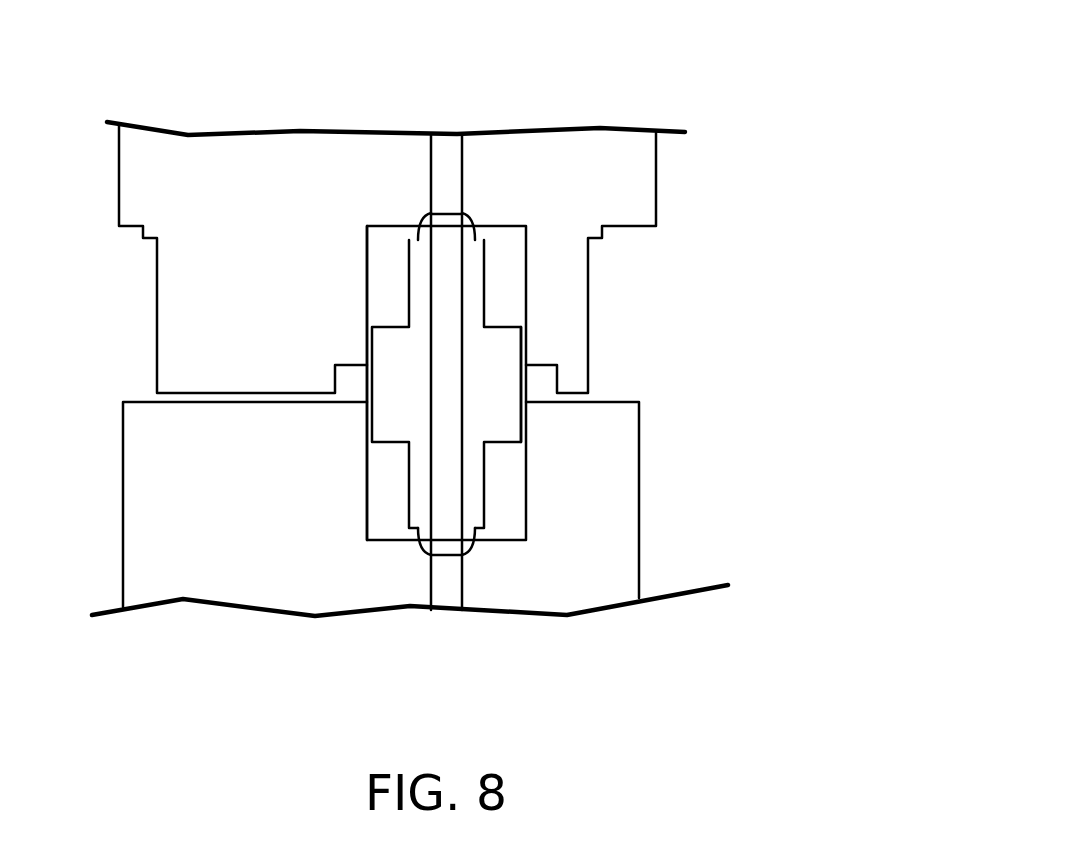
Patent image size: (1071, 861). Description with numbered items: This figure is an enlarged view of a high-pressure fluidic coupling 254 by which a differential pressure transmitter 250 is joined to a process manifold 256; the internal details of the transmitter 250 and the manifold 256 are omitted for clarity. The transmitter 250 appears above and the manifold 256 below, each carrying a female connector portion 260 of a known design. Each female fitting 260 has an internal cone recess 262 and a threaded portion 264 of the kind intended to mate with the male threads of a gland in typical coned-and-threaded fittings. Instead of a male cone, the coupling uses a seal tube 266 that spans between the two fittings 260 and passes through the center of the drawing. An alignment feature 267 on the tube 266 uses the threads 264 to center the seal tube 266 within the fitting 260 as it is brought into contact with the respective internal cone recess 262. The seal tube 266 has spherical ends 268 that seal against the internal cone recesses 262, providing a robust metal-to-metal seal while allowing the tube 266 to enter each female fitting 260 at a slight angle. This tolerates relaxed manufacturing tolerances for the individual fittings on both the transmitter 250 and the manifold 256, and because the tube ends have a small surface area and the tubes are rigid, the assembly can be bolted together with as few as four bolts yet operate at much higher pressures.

The differential pressure transmitter 250 is at (657, 161).
The high-pressure fluidic coupling 254 is at (714, 126).
The process manifold 256 is at (640, 520).
The female connector portion 260 is at (366, 450).
The internal cone recess 262 is at (465, 213).
The threaded portion 264 is at (367, 270).
The seal tube 266 is at (484, 490).
The alignment feature 267 is at (498, 372).
The spherical end 268 is at (420, 222).